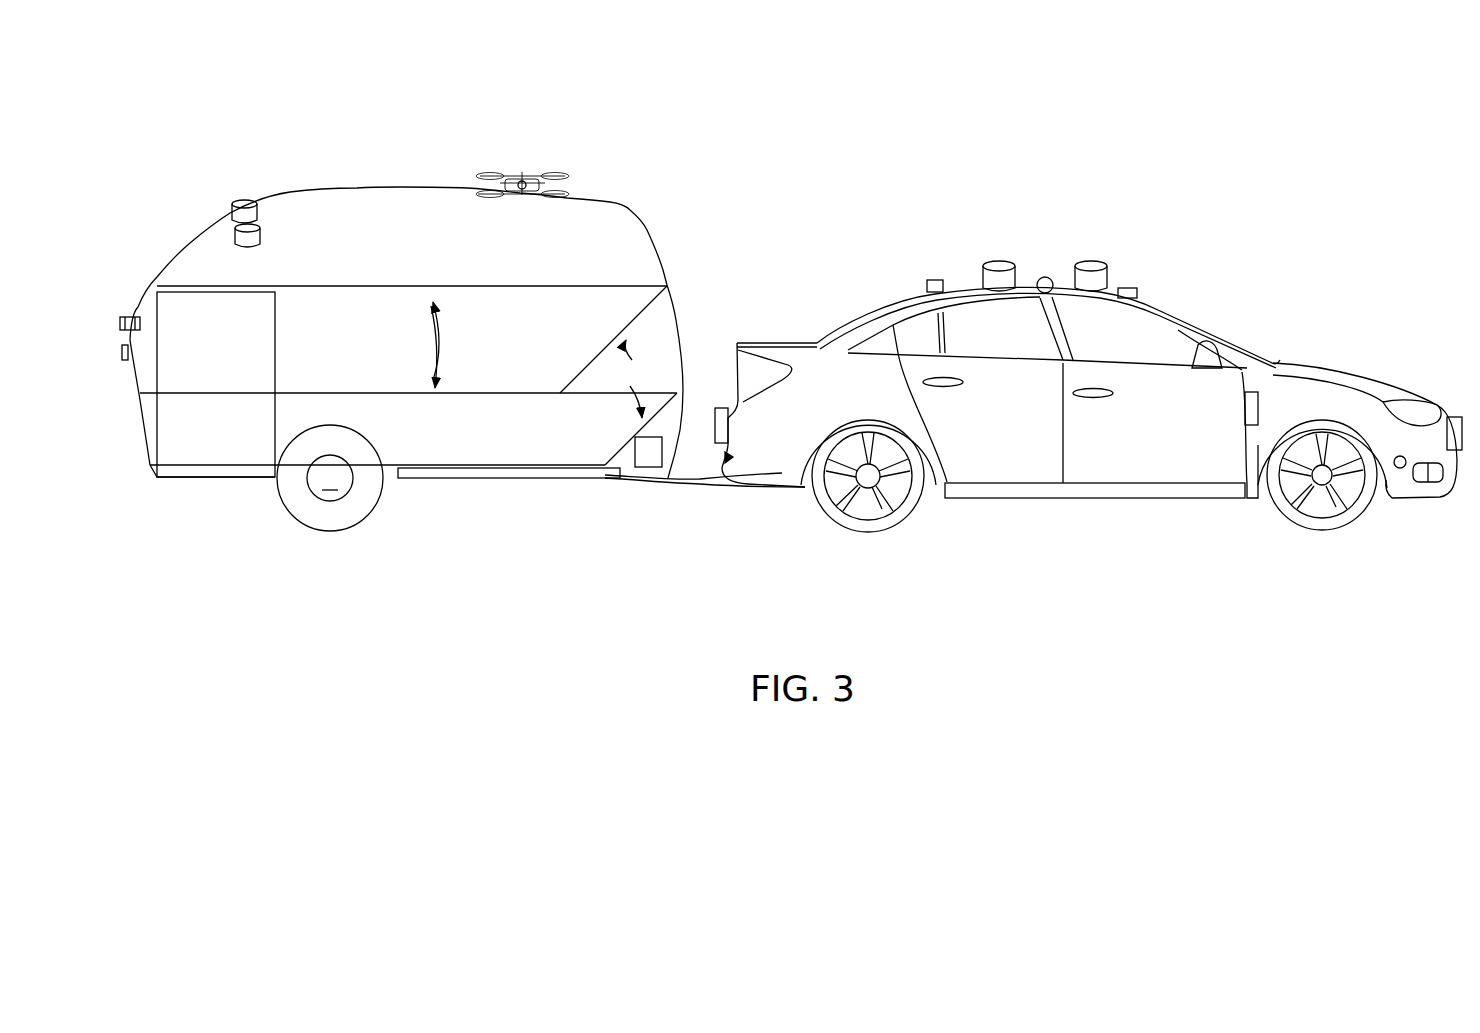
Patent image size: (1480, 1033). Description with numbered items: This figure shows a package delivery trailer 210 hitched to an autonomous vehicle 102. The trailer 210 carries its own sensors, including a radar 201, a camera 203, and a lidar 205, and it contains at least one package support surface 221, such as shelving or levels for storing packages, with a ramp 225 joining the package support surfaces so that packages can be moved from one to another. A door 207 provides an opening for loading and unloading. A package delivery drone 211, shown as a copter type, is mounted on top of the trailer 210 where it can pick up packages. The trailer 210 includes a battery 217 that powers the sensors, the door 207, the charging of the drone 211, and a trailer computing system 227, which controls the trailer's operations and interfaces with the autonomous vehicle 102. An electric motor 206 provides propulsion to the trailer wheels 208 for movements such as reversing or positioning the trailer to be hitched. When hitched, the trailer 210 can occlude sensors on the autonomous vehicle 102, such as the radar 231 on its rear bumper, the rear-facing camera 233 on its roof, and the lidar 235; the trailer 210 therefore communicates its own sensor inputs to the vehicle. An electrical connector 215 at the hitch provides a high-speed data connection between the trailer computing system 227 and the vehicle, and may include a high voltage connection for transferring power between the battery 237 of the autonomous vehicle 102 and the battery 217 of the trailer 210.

The autonomous vehicle 102 is at (1298, 285).
The radar 201 is at (119, 350).
The camera 203 is at (120, 313).
The lidar 205 is at (230, 207).
The electric motor 206 is at (320, 502).
The door 207 is at (152, 470).
The trailer wheels 208 is at (280, 507).
The trailer 210 is at (695, 212).
The package delivery drone 211 is at (592, 173).
The electrical connector 215 is at (698, 489).
The battery 217 is at (468, 480).
The package support surface 221 is at (298, 384).
The ramp 225 is at (630, 379).
The trailer computing system 227 is at (644, 471).
The radar 231 is at (720, 404).
The rear-facing camera 233 is at (928, 279).
The lidar 235 is at (990, 260).
The battery 237 is at (1006, 502).